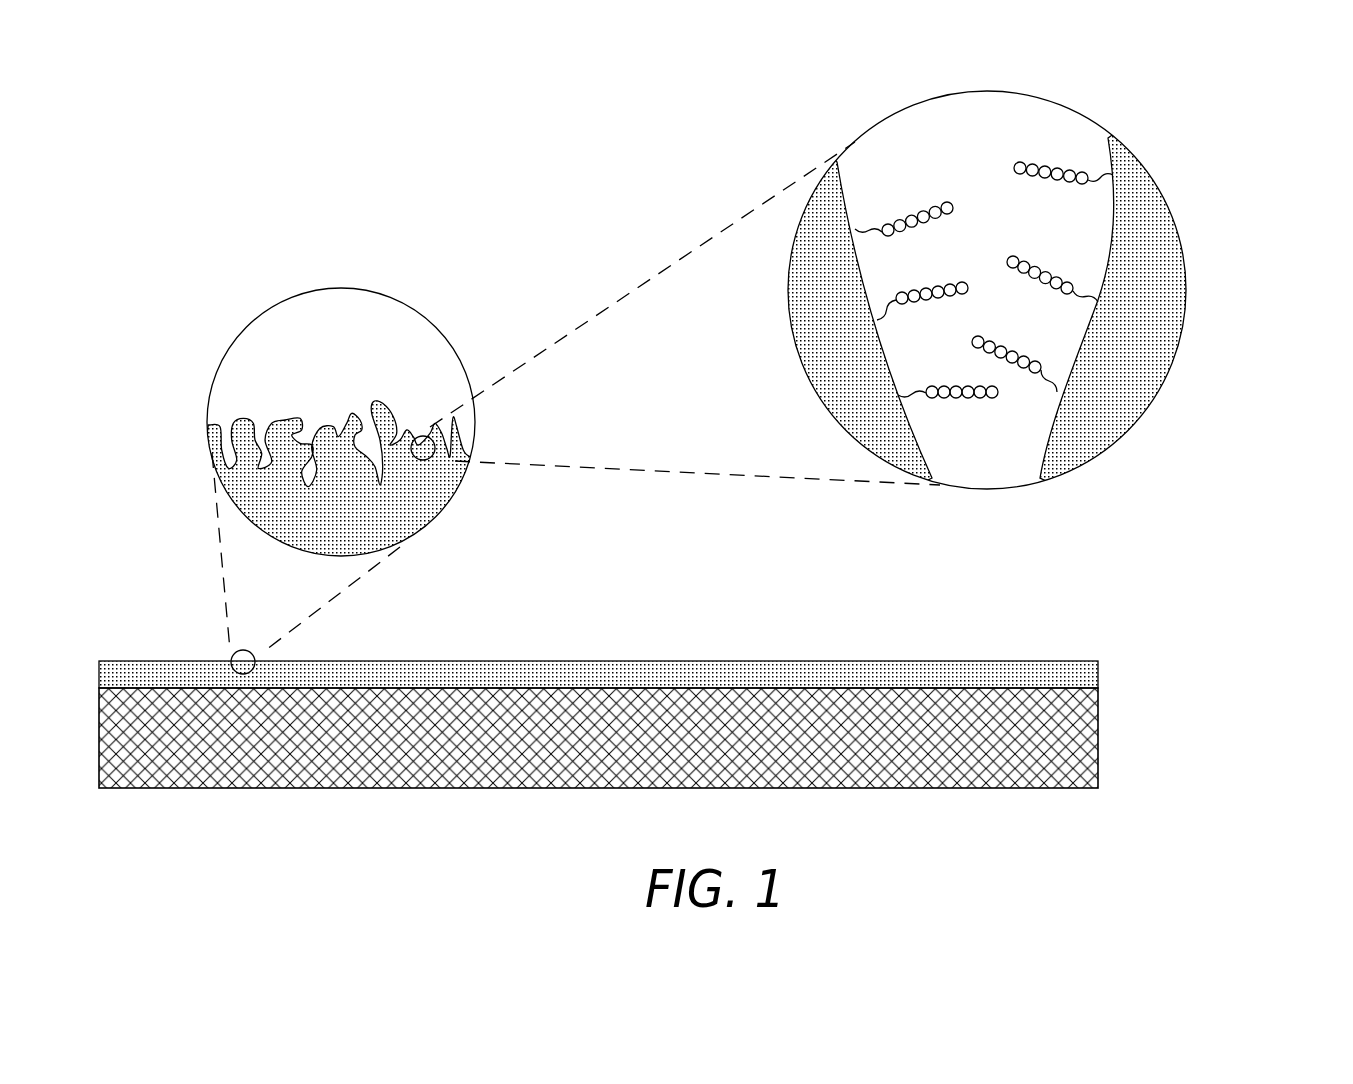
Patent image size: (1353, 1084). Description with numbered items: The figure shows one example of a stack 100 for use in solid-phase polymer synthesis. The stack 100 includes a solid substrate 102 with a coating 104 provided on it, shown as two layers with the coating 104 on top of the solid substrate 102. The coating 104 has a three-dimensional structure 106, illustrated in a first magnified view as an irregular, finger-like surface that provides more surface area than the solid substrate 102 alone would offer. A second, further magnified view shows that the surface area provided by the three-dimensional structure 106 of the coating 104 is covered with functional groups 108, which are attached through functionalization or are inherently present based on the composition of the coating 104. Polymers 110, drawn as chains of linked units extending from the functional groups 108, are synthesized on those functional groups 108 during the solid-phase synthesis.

The stack 100 is at (150, 115).
The solid substrate 102 is at (674, 738).
The coating 104 is at (663, 674).
The 3D structure 106 is at (340, 398).
The functional groups 108 is at (1087, 278).
The polymers 110 is at (923, 198).